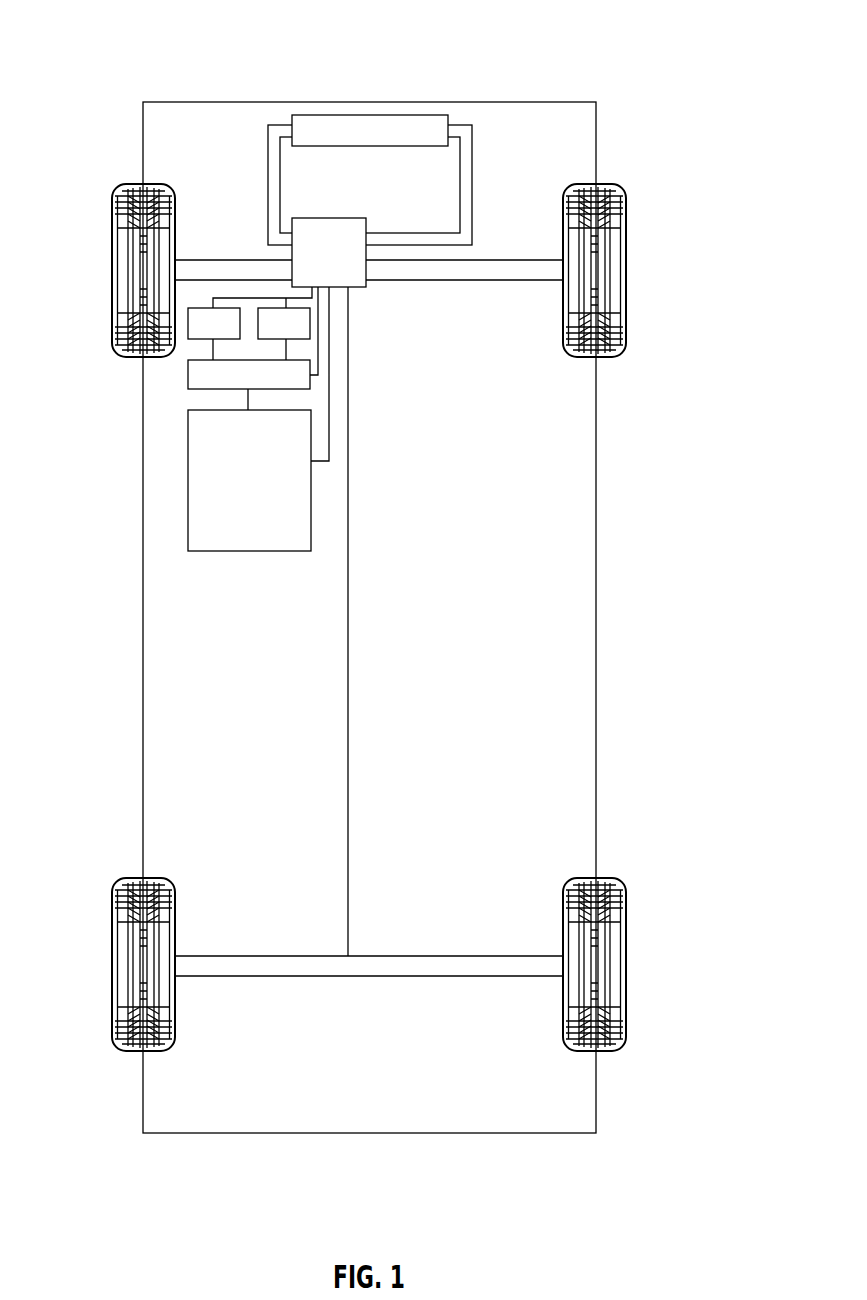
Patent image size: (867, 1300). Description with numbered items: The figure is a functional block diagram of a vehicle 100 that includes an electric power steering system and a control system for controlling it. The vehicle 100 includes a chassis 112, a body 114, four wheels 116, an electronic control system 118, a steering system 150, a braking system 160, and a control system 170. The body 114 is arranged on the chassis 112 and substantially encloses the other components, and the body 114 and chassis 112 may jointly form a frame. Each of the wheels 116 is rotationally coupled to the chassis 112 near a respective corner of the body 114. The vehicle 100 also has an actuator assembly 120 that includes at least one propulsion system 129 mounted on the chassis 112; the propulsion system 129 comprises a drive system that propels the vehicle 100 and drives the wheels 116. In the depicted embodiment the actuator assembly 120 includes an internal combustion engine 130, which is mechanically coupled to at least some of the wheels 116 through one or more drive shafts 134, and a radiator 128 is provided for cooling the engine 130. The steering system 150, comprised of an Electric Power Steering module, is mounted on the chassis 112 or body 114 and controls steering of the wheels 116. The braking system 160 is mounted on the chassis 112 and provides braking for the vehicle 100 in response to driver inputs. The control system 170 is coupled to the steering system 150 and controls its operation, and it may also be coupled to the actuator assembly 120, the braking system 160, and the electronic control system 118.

The vehicle 100 is at (645, 33).
The chassis 112 is at (348, 694).
The body 114 is at (143, 563).
The wheels 116 is at (112, 272).
The electronic control system 118 is at (270, 493).
The actuator assembly 120 is at (366, 295).
The radiator 128 is at (365, 115).
The propulsion system 129 is at (339, 218).
The internal combustion engine 130 is at (352, 254).
The drive shafts 134 is at (230, 259).
The steering system 150 is at (232, 336).
The braking system 160 is at (302, 336).
The control system 170 is at (269, 386).